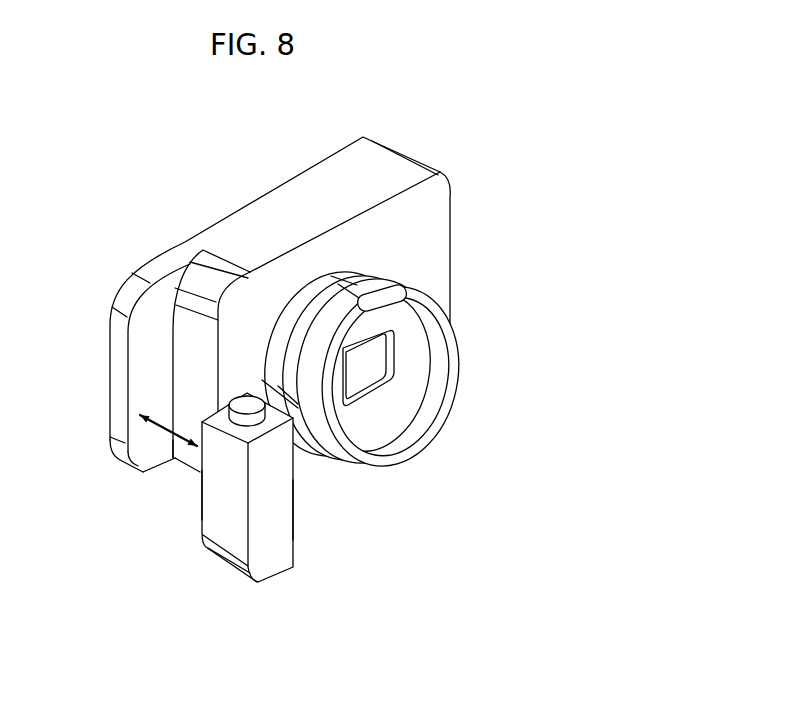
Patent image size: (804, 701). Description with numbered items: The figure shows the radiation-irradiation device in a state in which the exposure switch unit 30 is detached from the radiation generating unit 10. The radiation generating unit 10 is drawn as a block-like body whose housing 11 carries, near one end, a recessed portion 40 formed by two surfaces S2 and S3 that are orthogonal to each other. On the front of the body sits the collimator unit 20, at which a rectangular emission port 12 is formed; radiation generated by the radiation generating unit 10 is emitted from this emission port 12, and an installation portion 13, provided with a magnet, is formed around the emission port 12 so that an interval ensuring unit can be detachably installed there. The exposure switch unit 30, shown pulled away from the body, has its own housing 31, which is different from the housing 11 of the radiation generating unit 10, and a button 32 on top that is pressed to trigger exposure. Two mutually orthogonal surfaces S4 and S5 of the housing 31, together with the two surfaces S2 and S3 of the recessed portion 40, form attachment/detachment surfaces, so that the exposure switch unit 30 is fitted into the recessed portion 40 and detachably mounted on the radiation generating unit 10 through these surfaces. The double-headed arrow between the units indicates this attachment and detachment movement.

The radiation generating unit 10 is at (261, 178).
The housing 11 is at (300, 441).
The emission port 12 is at (362, 382).
The installation portion 13 is at (405, 370).
The collimator unit 20 is at (457, 330).
The exposure switch unit 30 is at (169, 503).
The housing 31 is at (258, 587).
The button 32 is at (244, 398).
The recessed portion 40 is at (153, 390).
The surface S2 is at (141, 449).
The surface S3 is at (181, 462).
The surface S4 is at (198, 514).
The surface S5 is at (299, 543).